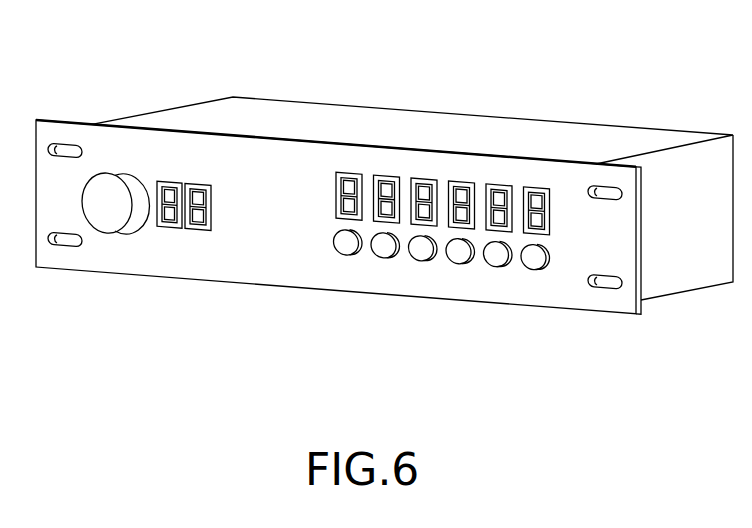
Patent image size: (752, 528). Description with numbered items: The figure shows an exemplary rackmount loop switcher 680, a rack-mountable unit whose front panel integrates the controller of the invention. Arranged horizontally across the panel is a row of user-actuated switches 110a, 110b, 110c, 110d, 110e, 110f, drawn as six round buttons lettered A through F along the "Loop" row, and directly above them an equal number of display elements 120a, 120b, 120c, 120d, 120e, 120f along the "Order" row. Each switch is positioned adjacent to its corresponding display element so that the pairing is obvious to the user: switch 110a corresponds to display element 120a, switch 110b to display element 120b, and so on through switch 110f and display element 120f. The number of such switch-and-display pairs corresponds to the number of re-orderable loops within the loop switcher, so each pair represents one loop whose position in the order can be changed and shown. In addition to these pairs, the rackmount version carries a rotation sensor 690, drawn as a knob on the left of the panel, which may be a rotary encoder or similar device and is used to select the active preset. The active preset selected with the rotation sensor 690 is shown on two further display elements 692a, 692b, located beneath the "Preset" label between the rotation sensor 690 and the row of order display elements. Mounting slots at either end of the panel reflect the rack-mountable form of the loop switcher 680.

The rackmount loop switcher 680 is at (165, 108).
The rotation sensor 690 is at (107, 233).
The display element 692a is at (167, 229).
The display element 692b is at (197, 229).
The display element 120a is at (349, 173).
The display element 120b is at (386, 176).
The display element 120c is at (424, 180).
The display element 120d is at (461, 183).
The display element 120e is at (499, 186).
The display element 120f is at (536, 189).
The user-actuated switch 110a is at (343, 255).
The user-actuated switch 110b is at (381, 258).
The user-actuated switch 110c is at (421, 261).
The user-actuated switch 110d is at (459, 264).
The user-actuated switch 110e is at (496, 267).
The user-actuated switch 110f is at (533, 270).